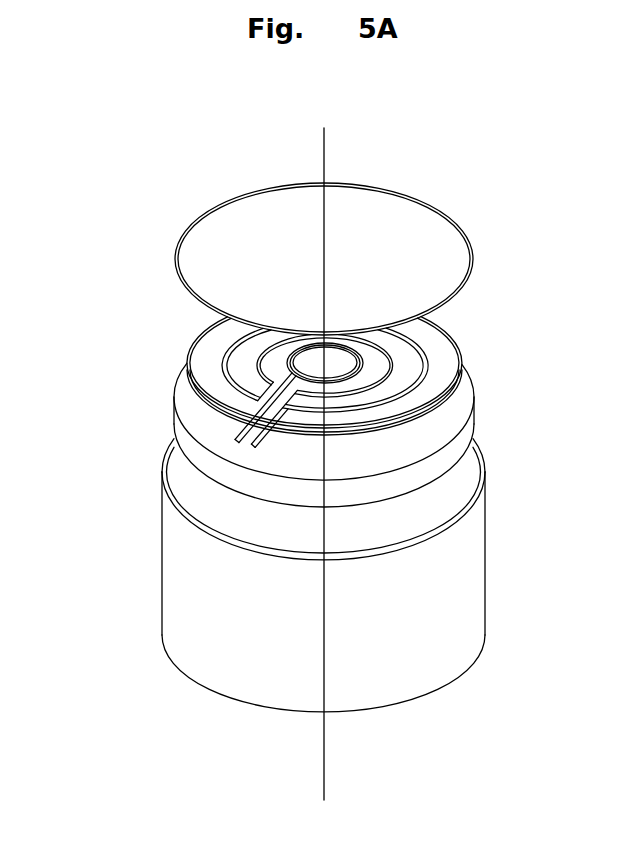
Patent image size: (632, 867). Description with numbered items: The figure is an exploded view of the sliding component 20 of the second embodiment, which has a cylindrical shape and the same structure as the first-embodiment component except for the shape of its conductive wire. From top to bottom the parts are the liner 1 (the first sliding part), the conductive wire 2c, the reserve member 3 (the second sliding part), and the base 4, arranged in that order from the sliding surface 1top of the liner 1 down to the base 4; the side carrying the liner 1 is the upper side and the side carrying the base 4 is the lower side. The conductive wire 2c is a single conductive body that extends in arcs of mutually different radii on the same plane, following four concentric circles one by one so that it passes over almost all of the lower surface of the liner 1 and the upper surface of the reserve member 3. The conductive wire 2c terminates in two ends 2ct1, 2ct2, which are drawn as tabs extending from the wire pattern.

The sliding component 20 is at (144, 264).
The liner 1 is at (470, 265).
The sliding surface 1top is at (385, 226).
The conductive wire 2c is at (457, 349).
The end of conductive wire 2ct1 is at (235, 441).
The end of conductive wire 2ct2 is at (254, 447).
The reserve member 3 is at (462, 442).
The base 4 is at (460, 597).